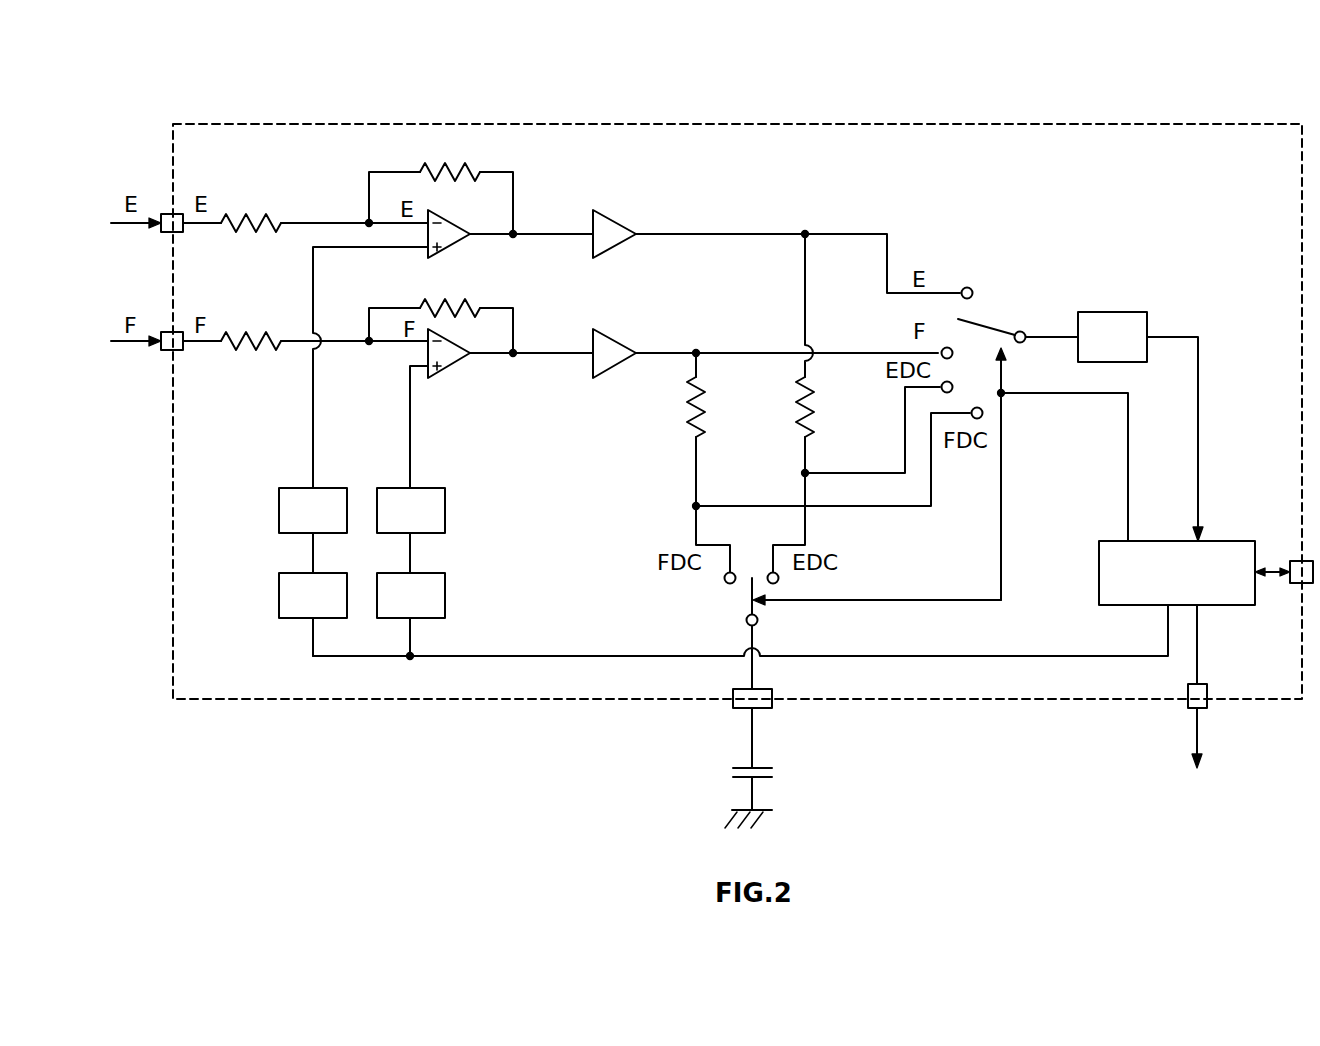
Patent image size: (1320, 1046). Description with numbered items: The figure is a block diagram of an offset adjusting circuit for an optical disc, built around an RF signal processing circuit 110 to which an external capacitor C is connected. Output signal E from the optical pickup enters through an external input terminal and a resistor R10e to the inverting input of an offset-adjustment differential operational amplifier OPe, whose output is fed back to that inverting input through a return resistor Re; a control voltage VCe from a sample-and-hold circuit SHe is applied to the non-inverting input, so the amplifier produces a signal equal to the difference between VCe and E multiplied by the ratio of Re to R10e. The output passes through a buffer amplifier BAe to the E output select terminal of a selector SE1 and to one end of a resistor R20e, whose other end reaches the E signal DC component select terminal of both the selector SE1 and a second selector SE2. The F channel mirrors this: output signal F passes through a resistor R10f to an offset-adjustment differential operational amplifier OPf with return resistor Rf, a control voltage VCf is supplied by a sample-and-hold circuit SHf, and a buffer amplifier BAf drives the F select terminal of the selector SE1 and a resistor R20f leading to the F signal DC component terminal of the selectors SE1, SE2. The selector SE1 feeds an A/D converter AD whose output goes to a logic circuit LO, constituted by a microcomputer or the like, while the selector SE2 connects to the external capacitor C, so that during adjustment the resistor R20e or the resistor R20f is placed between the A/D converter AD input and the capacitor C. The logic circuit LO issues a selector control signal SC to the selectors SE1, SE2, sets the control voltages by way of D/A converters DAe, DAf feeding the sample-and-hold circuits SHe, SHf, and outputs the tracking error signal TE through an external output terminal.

The RF signal processing circuit 110 is at (652, 124).
The resistor R10e is at (233, 207).
The resistor R10f is at (232, 357).
The return resistor Re is at (441, 184).
The return resistor Rf is at (441, 311).
The offset-adjustment differential operational amplifier OPe is at (455, 230).
The offset-adjustment differential operational amplifier OPf is at (445, 336).
The control voltage VCe is at (386, 367).
The control voltage VCf is at (516, 427).
The buffer amplifier BAe is at (616, 222).
The buffer amplifier BAf is at (617, 340).
The resistor R20e is at (860, 409).
The resistor R20f is at (835, 468).
The sample-and-hold circuit SHe is at (330, 486).
The sample-and-hold circuit SHf is at (428, 486).
The D/A converter DAe is at (328, 571).
The D/A converter DAf is at (432, 571).
The selector SE1 is at (1018, 321).
The selector SE2 is at (874, 633).
The A/D converter AD is at (1105, 310).
The selector control signal SC is at (1062, 474).
The logic circuit LO is at (1273, 479).
The tracking error signal TE is at (1208, 703).
The external capacitor C is at (760, 758).